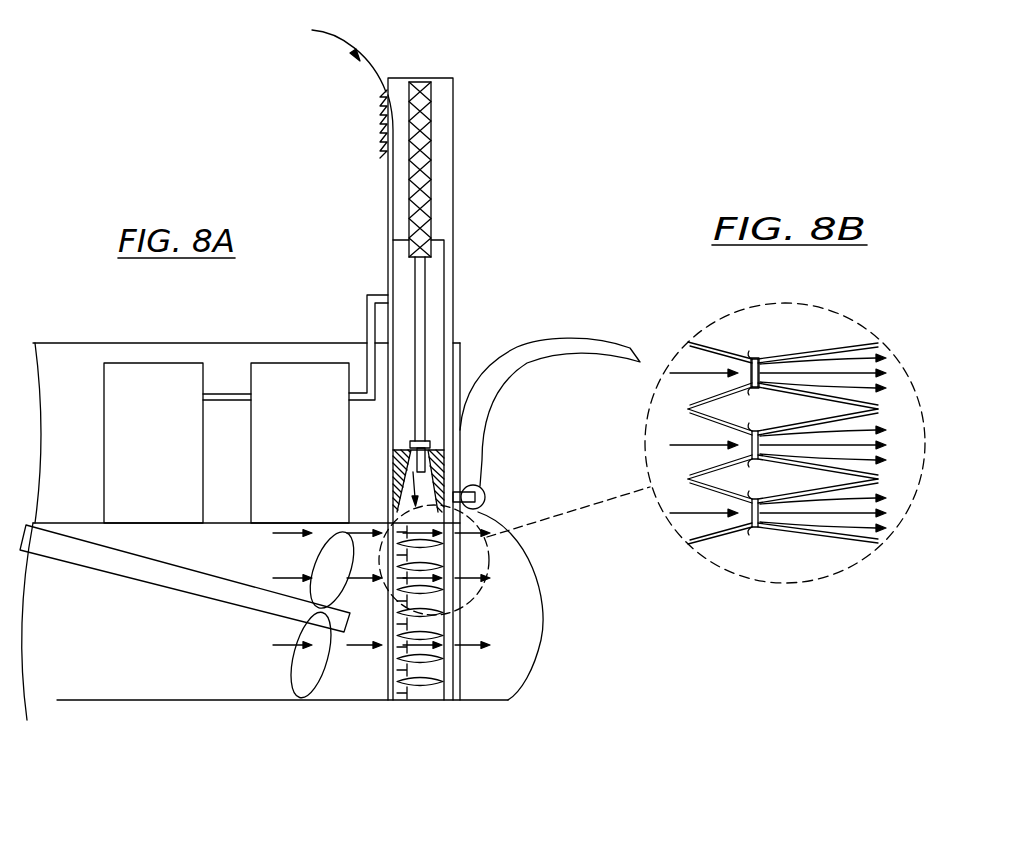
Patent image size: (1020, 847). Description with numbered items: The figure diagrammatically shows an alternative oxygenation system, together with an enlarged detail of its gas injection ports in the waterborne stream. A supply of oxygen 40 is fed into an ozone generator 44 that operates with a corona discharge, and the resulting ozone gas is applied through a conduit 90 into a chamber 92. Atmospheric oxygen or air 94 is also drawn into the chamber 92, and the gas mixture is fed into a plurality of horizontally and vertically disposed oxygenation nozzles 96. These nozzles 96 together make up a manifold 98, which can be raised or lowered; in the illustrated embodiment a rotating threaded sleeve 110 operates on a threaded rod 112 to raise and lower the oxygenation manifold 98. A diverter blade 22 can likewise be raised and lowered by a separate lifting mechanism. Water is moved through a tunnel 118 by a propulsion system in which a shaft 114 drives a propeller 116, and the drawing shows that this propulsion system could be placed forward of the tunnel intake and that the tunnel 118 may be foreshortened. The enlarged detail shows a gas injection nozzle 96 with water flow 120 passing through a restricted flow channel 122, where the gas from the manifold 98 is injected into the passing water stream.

In FIG. 8A, the diverter blade 22 is at (573, 335).
In FIG. 8A, the supply of oxygen 40 is at (153, 443).
In FIG. 8A, the ozone generator 44 is at (300, 443).
In FIG. 8A, the conduit 90 is at (365, 306).
In FIG. 8A, the chamber 92 is at (438, 328).
In FIG. 8A, the air 94 is at (330, 87).
In FIG. 8A, the oxygenation nozzles 96 is at (433, 683).
In FIG. 8B, the oxygenation nozzles 96 is at (803, 390).
In FIG. 8A, the manifold 98 is at (487, 620).
In FIG. 8A, the rotating threaded sleeve 110 is at (432, 157).
In FIG. 8A, the threaded rod 112 is at (425, 280).
In FIG. 8A, the shaft 114 is at (175, 590).
In FIG. 8A, the propeller 116 is at (322, 690).
In FIG. 8A, the tunnel 118 is at (130, 615).
In FIG. 8B, the water flow 120 is at (692, 372).
In FIG. 8B, the restricted flow channel 122 is at (742, 360).